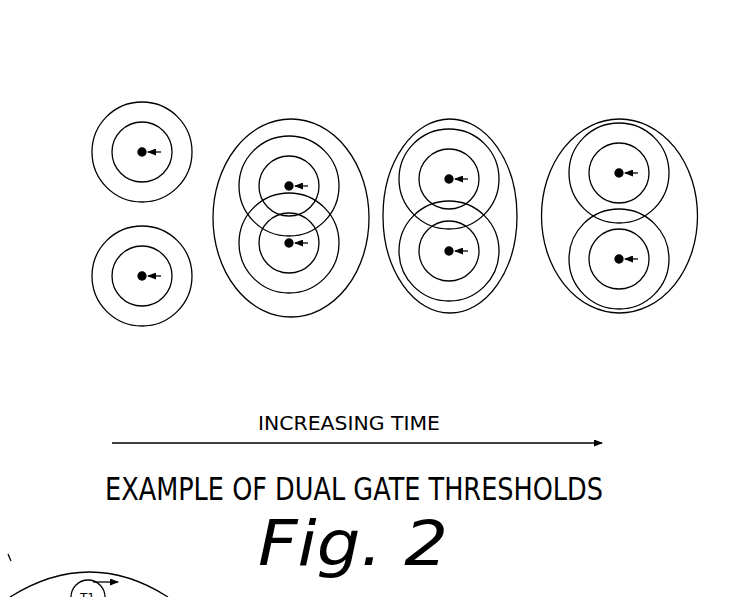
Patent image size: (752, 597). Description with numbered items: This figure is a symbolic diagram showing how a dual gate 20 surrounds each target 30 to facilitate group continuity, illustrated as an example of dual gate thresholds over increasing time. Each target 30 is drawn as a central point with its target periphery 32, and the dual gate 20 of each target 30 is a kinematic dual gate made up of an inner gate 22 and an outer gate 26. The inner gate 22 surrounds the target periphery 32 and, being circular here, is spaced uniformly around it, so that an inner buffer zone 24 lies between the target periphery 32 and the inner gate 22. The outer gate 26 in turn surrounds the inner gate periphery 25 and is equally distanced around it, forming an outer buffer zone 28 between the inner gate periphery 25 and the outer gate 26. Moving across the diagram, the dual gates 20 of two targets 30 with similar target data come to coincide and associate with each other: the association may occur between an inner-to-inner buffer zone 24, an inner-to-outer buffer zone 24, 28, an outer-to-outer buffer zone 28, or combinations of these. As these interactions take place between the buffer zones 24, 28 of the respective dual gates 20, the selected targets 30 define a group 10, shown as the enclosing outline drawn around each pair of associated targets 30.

The group 10 is at (411, 210).
The dual gate 20 is at (105, 197).
The inner gate 22 is at (260, 160).
The inner buffer zone 24 is at (122, 283).
The inner gate periphery 25 is at (110, 273).
The outer gate 26 is at (561, 278).
The outer buffer zone 28 is at (125, 118).
The target 30 is at (391, 294).
The target periphery 32 is at (142, 275).